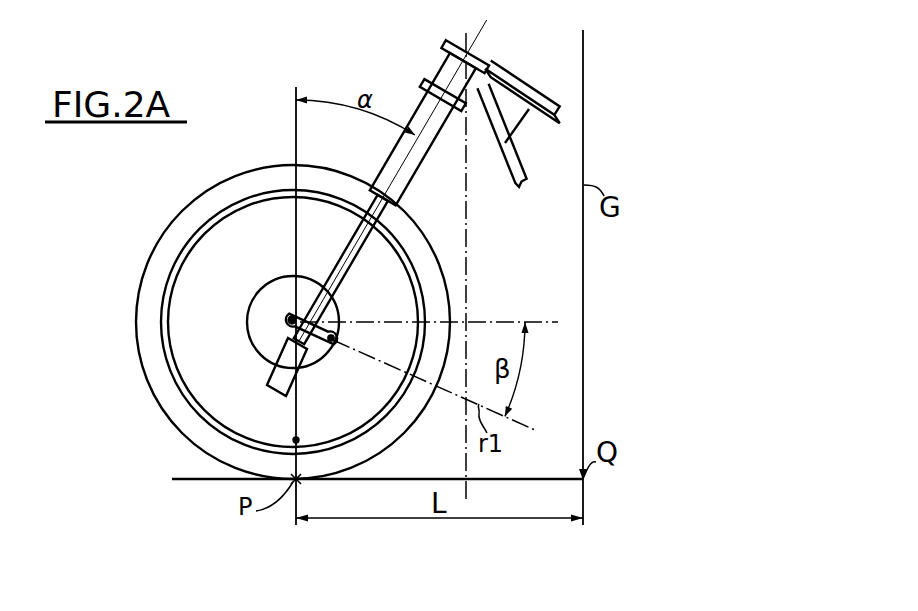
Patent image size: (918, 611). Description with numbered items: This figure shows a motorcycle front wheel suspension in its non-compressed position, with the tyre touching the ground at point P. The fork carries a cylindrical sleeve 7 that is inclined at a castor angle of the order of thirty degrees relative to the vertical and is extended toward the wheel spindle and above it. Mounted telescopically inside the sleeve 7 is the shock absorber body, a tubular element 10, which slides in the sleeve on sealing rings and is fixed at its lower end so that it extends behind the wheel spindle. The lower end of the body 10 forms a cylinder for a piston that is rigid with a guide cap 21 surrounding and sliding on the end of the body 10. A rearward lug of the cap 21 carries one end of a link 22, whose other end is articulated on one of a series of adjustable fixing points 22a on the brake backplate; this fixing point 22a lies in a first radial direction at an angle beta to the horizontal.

The cylindrical sleeve 7 is at (409, 181).
The tubular element 10 is at (338, 263).
The guide cap 21 is at (272, 384).
The link 22 is at (318, 348).
The adjustable fixing point 22a is at (333, 335).